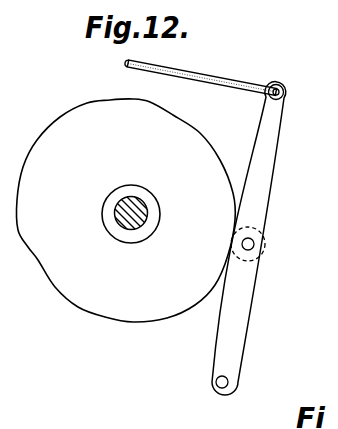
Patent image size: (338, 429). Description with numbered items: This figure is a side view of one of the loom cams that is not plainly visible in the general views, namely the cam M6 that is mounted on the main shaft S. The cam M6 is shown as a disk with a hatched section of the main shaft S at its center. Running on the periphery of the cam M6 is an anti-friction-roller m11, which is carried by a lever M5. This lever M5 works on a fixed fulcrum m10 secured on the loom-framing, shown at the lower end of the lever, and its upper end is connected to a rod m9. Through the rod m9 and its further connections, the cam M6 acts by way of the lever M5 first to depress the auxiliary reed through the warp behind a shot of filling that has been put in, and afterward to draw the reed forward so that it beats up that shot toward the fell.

The cam M6 is at (125, 210).
The main shaft S is at (144, 205).
The rod m9 is at (201, 72).
The lever M5 is at (280, 176).
The anti-friction-roller m11 is at (266, 244).
The fixed fulcrum m10 is at (218, 388).